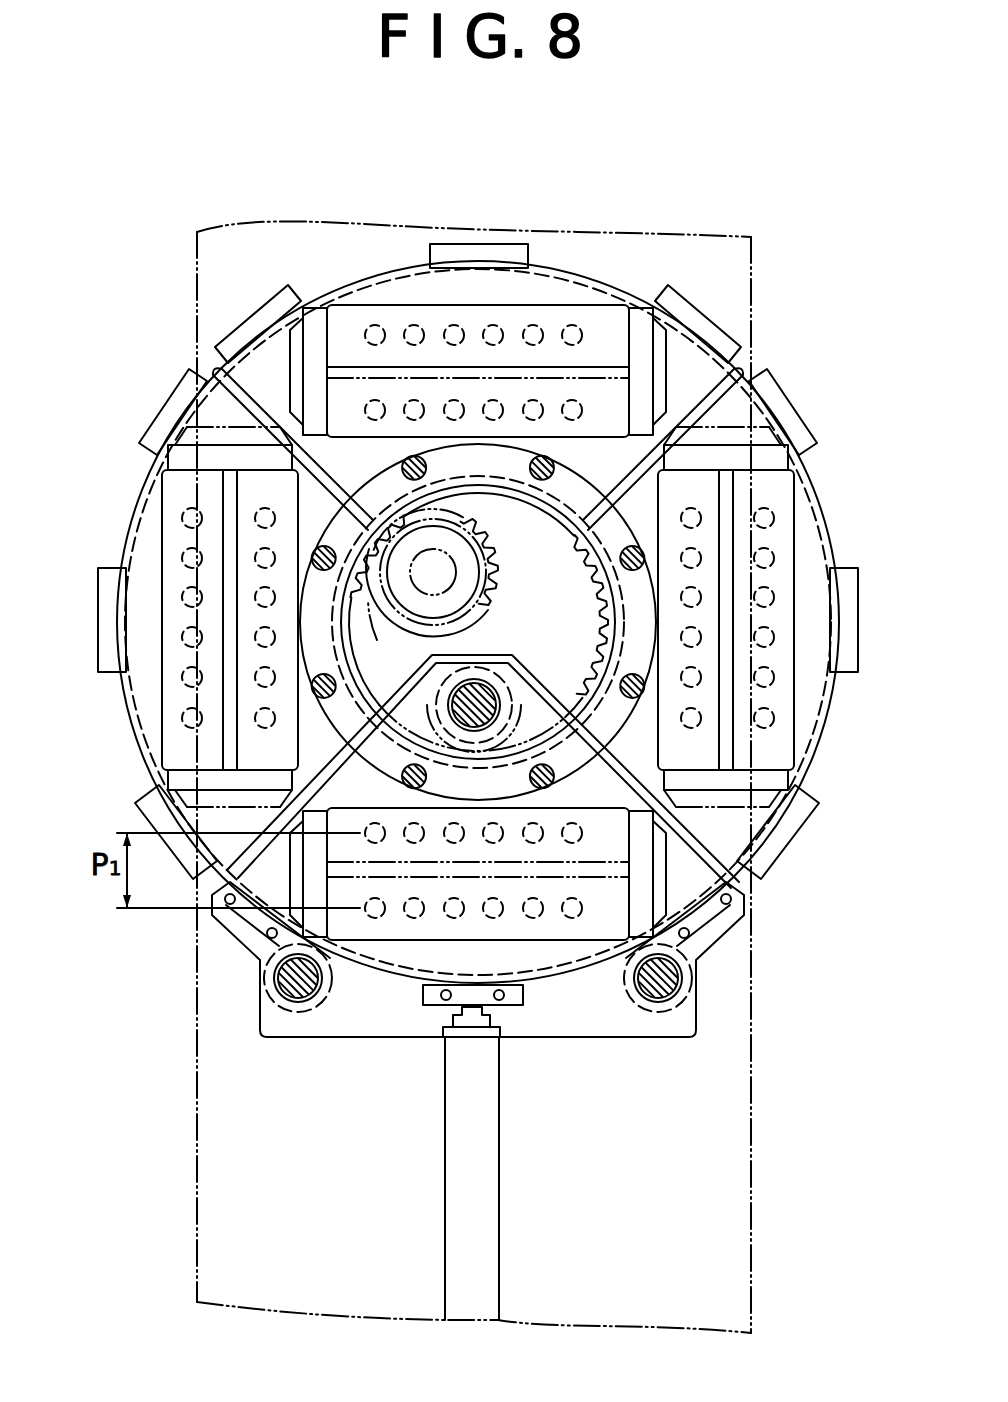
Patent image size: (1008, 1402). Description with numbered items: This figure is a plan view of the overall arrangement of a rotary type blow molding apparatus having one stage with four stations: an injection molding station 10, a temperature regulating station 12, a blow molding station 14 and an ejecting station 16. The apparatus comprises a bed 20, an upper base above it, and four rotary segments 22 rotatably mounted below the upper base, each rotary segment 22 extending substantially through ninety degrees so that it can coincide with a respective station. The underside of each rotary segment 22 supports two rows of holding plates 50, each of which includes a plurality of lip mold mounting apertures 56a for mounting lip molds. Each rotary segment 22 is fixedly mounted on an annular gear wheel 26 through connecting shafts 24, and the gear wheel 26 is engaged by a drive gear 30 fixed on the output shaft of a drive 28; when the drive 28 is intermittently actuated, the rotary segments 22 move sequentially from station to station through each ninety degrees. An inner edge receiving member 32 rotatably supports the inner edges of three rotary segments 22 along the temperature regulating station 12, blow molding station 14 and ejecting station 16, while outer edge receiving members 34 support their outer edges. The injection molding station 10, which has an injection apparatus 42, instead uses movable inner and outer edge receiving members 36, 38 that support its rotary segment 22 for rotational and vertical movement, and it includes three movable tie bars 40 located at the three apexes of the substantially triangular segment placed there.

The injection molding station 10 is at (710, 950).
The temperature regulating station 12 is at (812, 472).
The blow molding station 14 is at (567, 263).
The ejecting station 16 is at (128, 476).
The bed 20 is at (735, 248).
The rotary segment 22 is at (342, 287).
The connecting shaft 24 is at (618, 565).
The annular gear wheel 26 is at (358, 606).
The drive 28 is at (462, 532).
The drive gear 30 is at (500, 607).
The inner edge receiving member 32 is at (395, 695).
The outer edge receiving member 34 is at (480, 244).
The movable inner edge receiving member 36 is at (405, 715).
The movable outer edge receiving member 38 is at (618, 1037).
The movable tie bar 40 is at (478, 700).
The injection apparatus 42 is at (500, 1237).
The holding plate 50 is at (385, 305).
The lip mold mounting aperture 56a is at (776, 722).